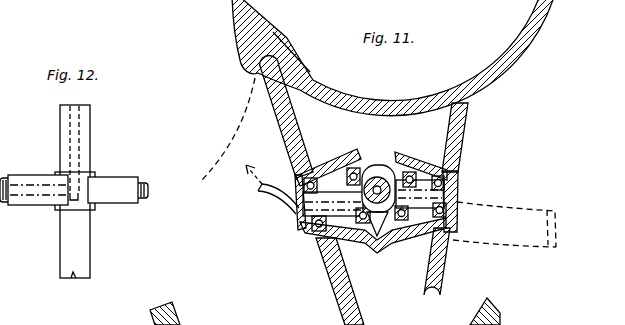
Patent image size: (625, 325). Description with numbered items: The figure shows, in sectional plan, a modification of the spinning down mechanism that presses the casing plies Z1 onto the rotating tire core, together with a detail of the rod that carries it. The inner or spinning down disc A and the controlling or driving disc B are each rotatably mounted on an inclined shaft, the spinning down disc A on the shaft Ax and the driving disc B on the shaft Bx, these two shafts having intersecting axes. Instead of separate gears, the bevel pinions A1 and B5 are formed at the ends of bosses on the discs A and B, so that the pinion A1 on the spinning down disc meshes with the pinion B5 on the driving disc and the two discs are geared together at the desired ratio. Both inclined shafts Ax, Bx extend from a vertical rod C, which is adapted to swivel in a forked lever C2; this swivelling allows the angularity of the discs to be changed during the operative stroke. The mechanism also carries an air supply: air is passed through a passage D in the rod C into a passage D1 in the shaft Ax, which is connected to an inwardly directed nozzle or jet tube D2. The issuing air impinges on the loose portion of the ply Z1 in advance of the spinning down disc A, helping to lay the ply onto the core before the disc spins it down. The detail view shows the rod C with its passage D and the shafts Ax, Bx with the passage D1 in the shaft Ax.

In FIG. 11, the casing plies Z1 is at (221, 171).
In FIG. 11, the spinning down disc A is at (337, 293).
In FIG. 11, the driving disc B is at (462, 144).
In FIG. 11, the bevel pinion A1 is at (360, 148).
In FIG. 11, the inclined shaft Ax is at (320, 244).
In FIG. 12, the inclined shaft Ax is at (45, 204).
In FIG. 11, the bevel pinion B5 is at (396, 160).
In FIG. 11, the inclined shaft Bx is at (447, 233).
In FIG. 12, the inclined shaft Bx is at (118, 176).
In FIG. 11, the vertical rod C is at (388, 240).
In FIG. 12, the vertical rod C is at (91, 133).
In FIG. 11, the air passage D is at (377, 178).
In FIG. 12, the air passage D is at (78, 107).
In FIG. 11, the air passage D1 is at (300, 223).
In FIG. 12, the air passage D1 is at (30, 194).
In FIG. 11, the jet tube D2 is at (268, 198).
In FIG. 11, the forked lever C2 is at (483, 220).